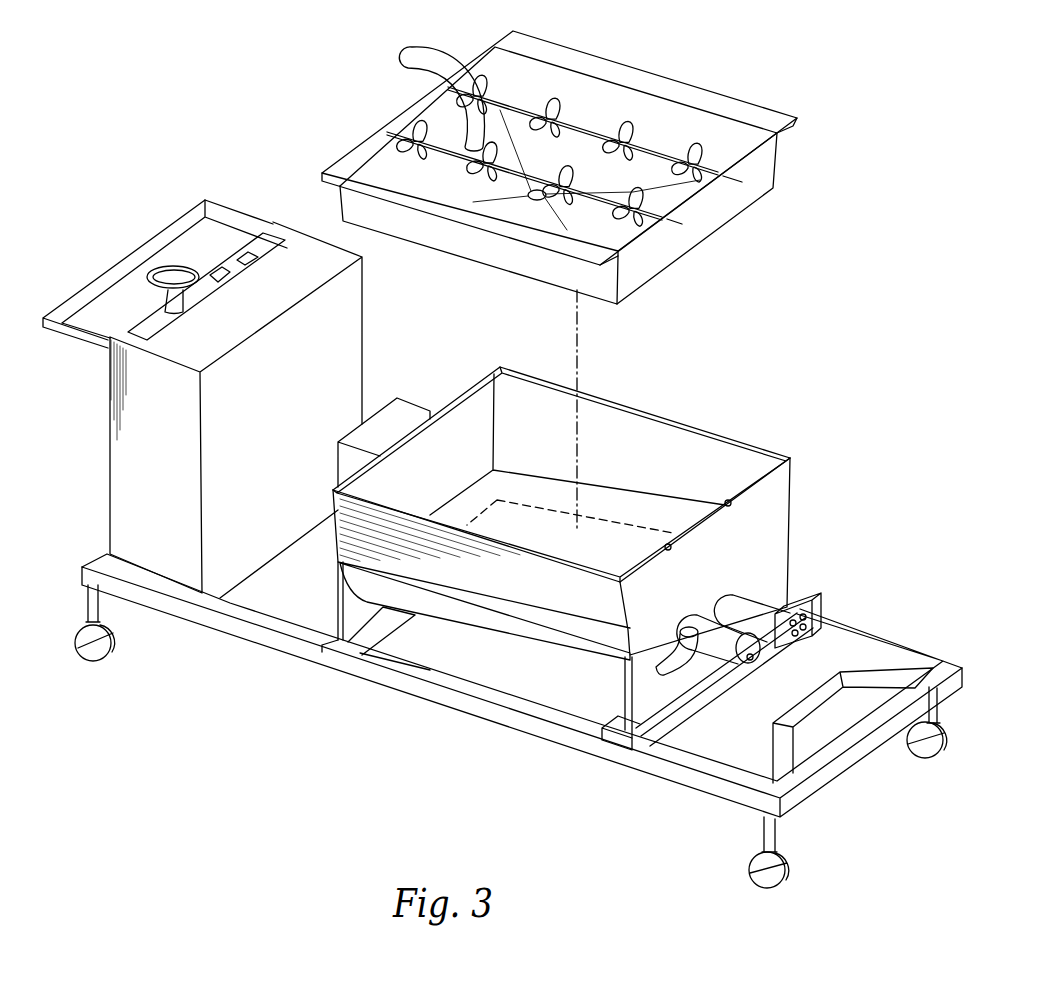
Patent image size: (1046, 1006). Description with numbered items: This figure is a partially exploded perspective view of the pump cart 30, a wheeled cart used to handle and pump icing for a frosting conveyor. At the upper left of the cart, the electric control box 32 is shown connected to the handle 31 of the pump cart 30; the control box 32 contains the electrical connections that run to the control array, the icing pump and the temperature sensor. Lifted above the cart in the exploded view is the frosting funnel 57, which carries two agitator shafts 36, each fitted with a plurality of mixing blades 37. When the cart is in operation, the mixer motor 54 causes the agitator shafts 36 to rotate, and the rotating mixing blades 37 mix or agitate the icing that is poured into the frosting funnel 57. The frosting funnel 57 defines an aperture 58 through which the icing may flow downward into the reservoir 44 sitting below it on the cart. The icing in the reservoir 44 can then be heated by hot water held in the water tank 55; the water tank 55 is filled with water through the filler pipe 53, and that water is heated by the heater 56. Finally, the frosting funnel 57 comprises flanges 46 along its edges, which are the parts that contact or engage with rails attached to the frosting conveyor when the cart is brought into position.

The pump cart 30 is at (857, 224).
The handle 31 is at (140, 245).
The electric control box 32 is at (293, 262).
The agitator shafts 36 is at (583, 128).
The mixing blades 37 is at (622, 132).
The reservoir 44 is at (790, 488).
The flanges 46 is at (755, 115).
The filler pipe 53 is at (655, 677).
The mixer motor 54 is at (722, 630).
The water tank 55 is at (600, 540).
The heater 56 is at (802, 597).
The frosting funnel 57 is at (779, 158).
The aperture 58 is at (537, 201).